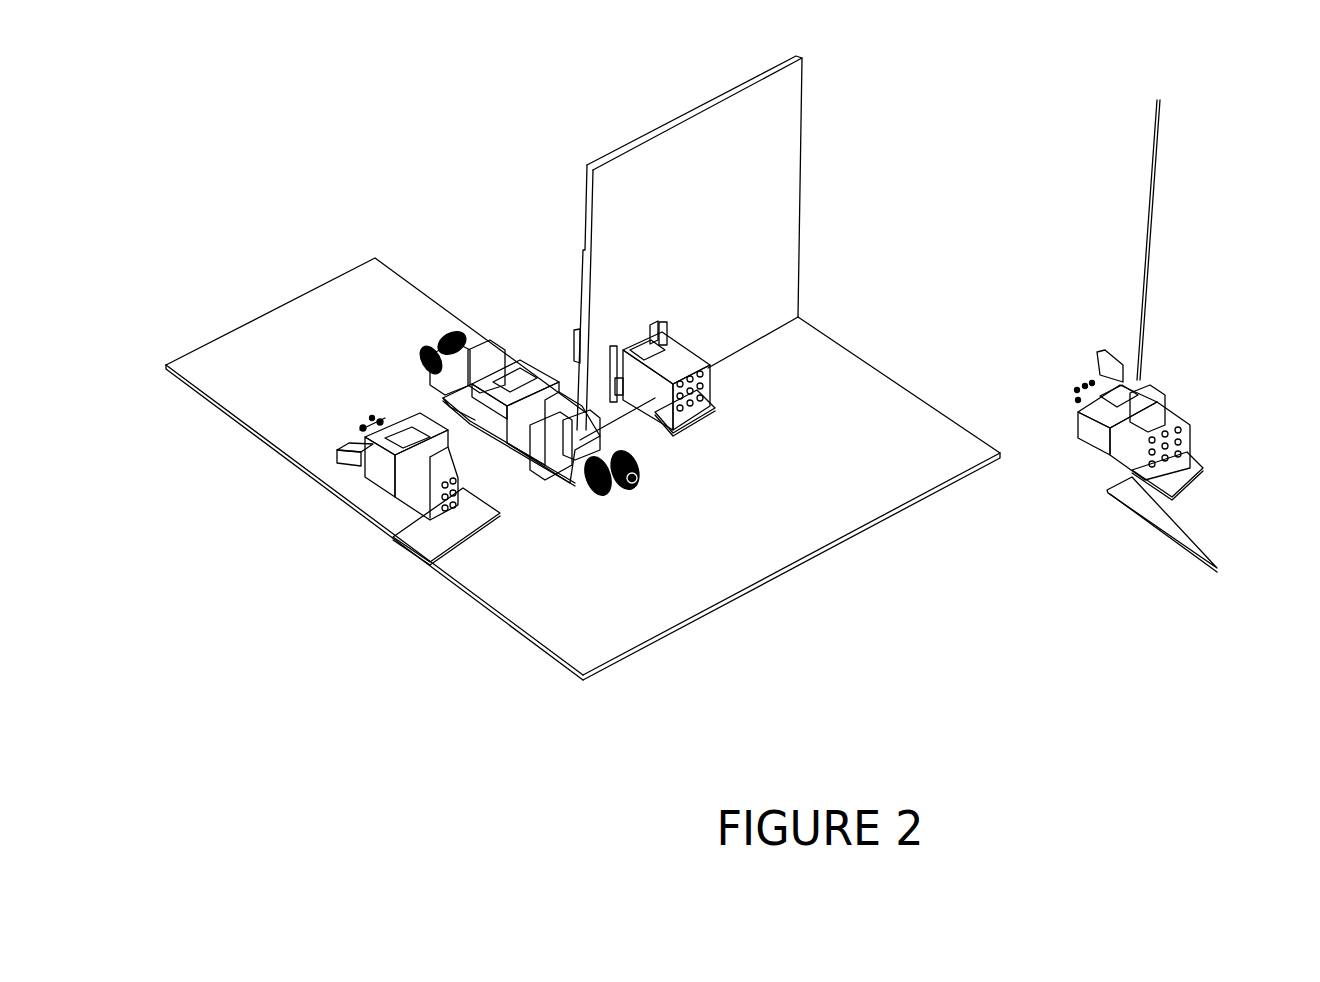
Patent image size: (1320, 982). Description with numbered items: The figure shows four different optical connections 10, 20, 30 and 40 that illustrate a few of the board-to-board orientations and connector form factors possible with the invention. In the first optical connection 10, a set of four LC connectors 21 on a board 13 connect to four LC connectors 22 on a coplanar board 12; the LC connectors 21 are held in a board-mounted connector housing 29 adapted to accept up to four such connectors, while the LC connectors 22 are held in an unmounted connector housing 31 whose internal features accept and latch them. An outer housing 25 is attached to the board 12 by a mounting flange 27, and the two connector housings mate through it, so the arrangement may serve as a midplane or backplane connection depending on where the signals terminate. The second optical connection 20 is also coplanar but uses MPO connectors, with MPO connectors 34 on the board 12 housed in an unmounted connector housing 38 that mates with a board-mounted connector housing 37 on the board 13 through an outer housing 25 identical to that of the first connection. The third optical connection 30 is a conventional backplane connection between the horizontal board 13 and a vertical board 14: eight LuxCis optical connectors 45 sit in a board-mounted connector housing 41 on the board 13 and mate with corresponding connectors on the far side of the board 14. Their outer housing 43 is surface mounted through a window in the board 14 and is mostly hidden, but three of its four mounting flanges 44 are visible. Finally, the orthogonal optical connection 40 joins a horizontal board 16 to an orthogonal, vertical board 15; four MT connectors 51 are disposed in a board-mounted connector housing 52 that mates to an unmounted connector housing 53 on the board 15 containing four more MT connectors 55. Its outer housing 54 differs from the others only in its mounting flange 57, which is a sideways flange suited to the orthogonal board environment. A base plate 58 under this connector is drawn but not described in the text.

The optical connection 10 is at (354, 548).
The board 12 is at (253, 405).
The board 13 is at (566, 628).
The vertical board 14 is at (625, 178).
The vertical board 15 is at (1128, 231).
The horizontal board 16 is at (1210, 550).
The optical connection 20 is at (440, 262).
The LC connectors 21 is at (492, 508).
The LC connectors 22 is at (366, 477).
The outer housing 25 is at (362, 472).
The mounting flange 27 is at (377, 453).
The board-mounted connector housing 29 is at (416, 498).
The optical connection 30 is at (719, 279).
The unmounted connector housing 31 is at (376, 468).
The MPO connectors 34 is at (444, 339).
The board-mounted connector housing 37 is at (525, 444).
The unmounted connector housing 38 is at (513, 375).
The optical connection 40 is at (1074, 510).
The board-mounted connector housing 41 is at (680, 362).
The outer housing 43 is at (667, 333).
The mounting flanges 44 is at (618, 353).
The LuxCis optical connectors 45 is at (705, 373).
The MT connectors 51 is at (1180, 470).
The board-mounted connector housing 52 is at (1165, 427).
The unmounted connector housing 53 is at (1120, 395).
The outer housing 54 is at (1085, 430).
The MT connectors 55 is at (1078, 400).
The mounting flange 57 is at (1097, 358).
The base plate 58 is at (1200, 468).